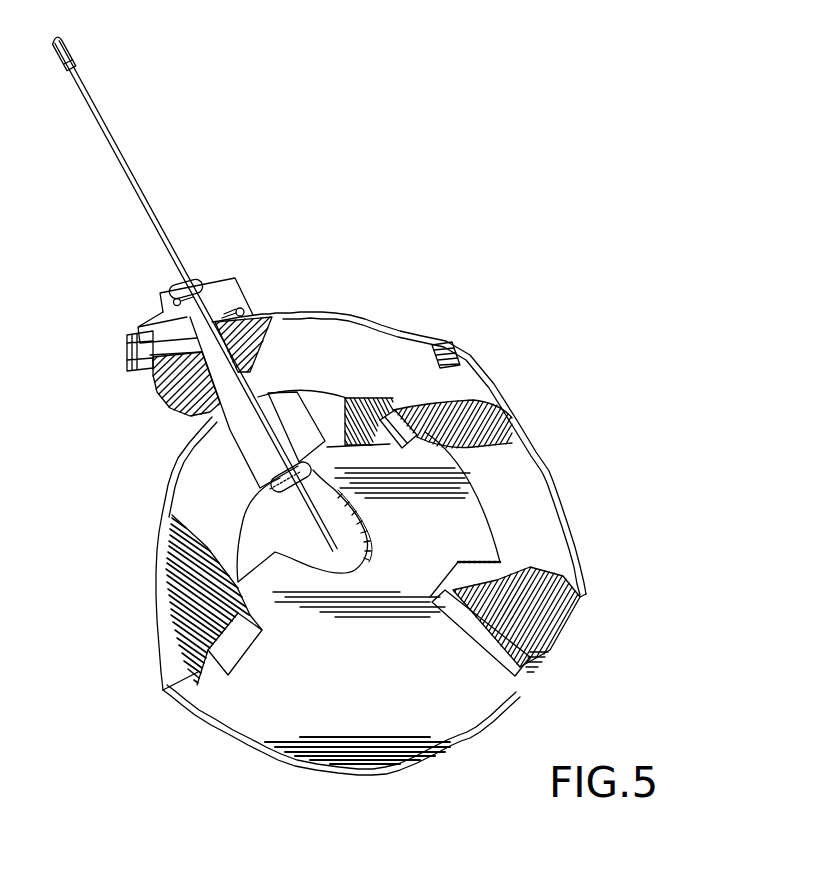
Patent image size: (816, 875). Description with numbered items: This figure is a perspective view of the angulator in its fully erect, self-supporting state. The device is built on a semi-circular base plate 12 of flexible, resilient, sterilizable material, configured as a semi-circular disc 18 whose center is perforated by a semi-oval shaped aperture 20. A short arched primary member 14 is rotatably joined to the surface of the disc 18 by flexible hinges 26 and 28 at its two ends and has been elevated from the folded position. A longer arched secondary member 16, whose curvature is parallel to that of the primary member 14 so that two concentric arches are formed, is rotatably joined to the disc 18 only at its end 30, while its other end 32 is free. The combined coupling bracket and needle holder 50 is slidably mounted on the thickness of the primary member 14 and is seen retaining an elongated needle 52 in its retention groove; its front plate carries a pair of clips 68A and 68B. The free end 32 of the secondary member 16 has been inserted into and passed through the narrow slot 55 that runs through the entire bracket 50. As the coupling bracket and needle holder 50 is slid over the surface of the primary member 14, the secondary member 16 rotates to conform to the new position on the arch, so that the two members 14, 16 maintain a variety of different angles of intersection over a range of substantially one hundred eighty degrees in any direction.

The base plate 12 is at (493, 378).
The primary member 14 is at (203, 510).
The secondary member 16 is at (517, 511).
The semi-circular disc 18 is at (368, 672).
The aperture 20 is at (313, 513).
The flexible hinge 26 is at (245, 612).
The flexible hinge 28 is at (393, 412).
The end of secondary member 30 is at (460, 637).
The end of secondary member 32 is at (158, 392).
The combined coupling bracket and needle holder 50 is at (237, 297).
The needle 52 is at (99, 109).
The slot 55 is at (271, 408).
The clip 68A is at (200, 276).
The clip 68B is at (306, 481).